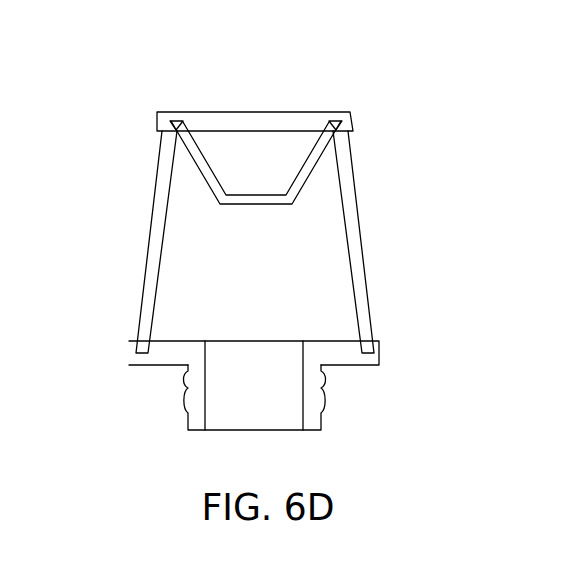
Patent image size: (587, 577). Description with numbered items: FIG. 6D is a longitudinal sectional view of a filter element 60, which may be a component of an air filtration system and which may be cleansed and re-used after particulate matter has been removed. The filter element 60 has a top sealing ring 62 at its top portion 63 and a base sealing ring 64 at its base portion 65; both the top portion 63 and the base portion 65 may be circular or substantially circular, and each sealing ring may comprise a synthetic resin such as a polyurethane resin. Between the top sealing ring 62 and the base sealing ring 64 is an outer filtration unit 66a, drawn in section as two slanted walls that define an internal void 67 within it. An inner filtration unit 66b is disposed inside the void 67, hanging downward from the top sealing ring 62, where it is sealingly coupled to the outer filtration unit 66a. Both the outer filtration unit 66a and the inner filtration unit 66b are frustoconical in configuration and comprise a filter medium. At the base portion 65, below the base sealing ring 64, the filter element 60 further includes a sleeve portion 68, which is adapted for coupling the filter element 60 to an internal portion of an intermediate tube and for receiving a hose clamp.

The filter element 60 is at (141, 86).
The top sealing ring 62 is at (288, 112).
The top portion 63 is at (365, 120).
The base sealing ring 64 is at (379, 348).
The base portion 65 is at (114, 362).
The outer filtration unit 66a is at (357, 217).
The inner filtration unit 66b is at (248, 207).
The internal void 67 is at (269, 299).
The sleeve portion 68 is at (322, 395).